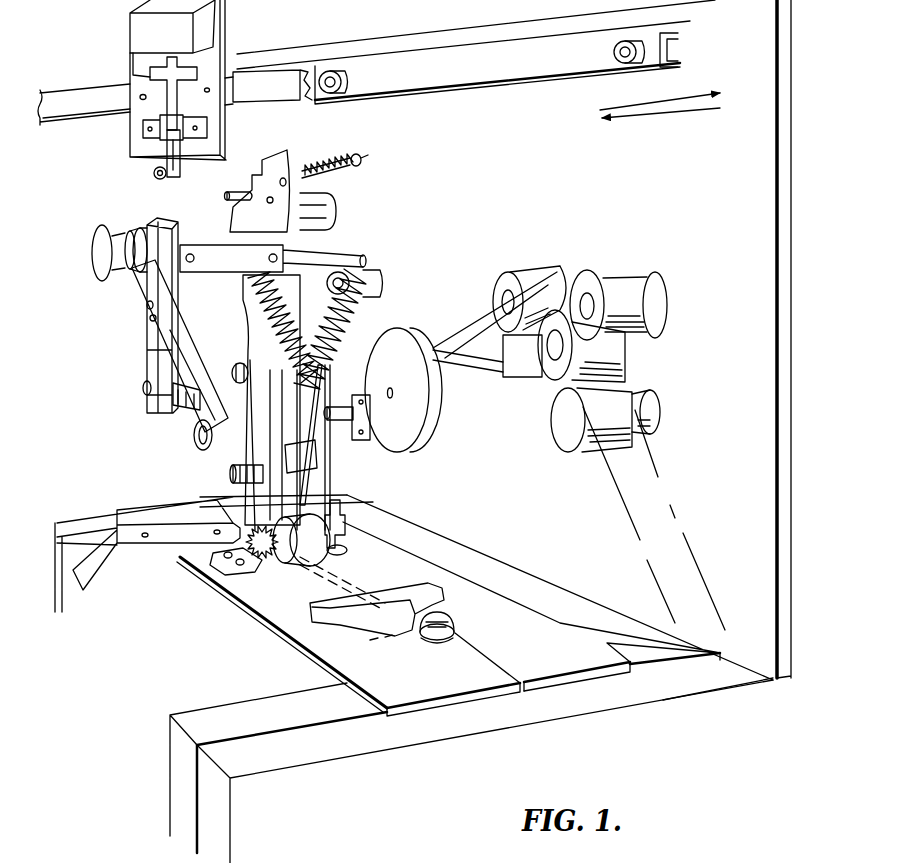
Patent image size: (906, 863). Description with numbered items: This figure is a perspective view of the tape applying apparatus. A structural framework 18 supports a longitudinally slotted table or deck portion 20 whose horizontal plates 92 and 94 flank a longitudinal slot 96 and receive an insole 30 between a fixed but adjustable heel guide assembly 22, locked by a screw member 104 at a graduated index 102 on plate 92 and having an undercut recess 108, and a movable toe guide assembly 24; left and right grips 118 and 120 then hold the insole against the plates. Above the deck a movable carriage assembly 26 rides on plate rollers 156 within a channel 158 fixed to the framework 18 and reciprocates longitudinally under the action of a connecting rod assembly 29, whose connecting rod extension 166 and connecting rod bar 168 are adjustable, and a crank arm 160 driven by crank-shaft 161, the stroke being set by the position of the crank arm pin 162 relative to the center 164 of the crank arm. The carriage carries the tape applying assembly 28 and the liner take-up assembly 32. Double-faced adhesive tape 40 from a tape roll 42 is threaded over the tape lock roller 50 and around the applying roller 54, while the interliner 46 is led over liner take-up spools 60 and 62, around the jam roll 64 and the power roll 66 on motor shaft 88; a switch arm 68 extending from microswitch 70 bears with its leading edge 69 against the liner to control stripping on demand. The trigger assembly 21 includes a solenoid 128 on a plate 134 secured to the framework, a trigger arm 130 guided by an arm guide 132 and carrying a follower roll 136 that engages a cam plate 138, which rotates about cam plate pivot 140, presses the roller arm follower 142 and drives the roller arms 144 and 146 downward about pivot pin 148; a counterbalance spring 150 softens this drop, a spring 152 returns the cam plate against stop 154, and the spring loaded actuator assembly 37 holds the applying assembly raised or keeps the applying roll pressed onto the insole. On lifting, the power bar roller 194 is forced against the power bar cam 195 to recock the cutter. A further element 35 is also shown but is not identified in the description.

The structural framework 18 is at (70, 140).
The table or deck portion 20 is at (548, 707).
The trigger assembly 21 is at (320, 127).
The heel guide assembly 22 is at (471, 610).
The toe guide assembly 24 is at (190, 503).
The carriage assembly 26 is at (578, 163).
The tape applying assembly 28 is at (169, 453).
The connecting rod assembly 29 is at (131, 327).
The insole 30 is at (377, 573).
The liner take-up assembly 32 is at (656, 244).
The bracket 35 is at (395, 464).
The spring loaded actuator assembly 37 is at (361, 317).
The adhesive tape 40 is at (392, 390).
The tape roll 42 is at (418, 426).
The interliner 46 is at (648, 493).
The tape lock roller 50 is at (286, 402).
The applying roller 54 is at (277, 568).
The liner take-up spool 60 is at (507, 280).
The liner take-up spool 62 is at (661, 297).
The liner take-up jam roll 64 is at (625, 367).
The liner take-up power roll 66 is at (563, 430).
The liner take-up switch arm 68 is at (492, 365).
The leading edge 69 is at (466, 352).
The microswitch 70 is at (522, 356).
The shaft 88 is at (653, 393).
The horizontal plate 92 is at (452, 676).
The horizontal plate 94 is at (534, 655).
The longitudinal slot 96 is at (467, 660).
The graduated index 102 is at (388, 637).
The heel guide assembly screw member 104 is at (455, 624).
The undercut recess 108 is at (309, 612).
The left grip 118 is at (223, 560).
The right grip 120 is at (348, 545).
The electrical solenoid 128 is at (182, 35).
The trigger arm 130 is at (170, 147).
The arm guide 132 is at (205, 116).
The plate 134 is at (140, 73).
The follower roll 136 is at (156, 177).
The cam plate 138 is at (265, 172).
The cam plate pivot 140 is at (264, 205).
The roller arm follower 142 is at (290, 364).
The roller arm 144 is at (233, 460).
The roller arm 146 is at (312, 481).
The pivot pin 148 is at (195, 436).
The counterbalance spring 150 is at (288, 330).
The spring 152 is at (334, 162).
The stop 154 is at (224, 195).
The plate rollers 156 is at (340, 71).
The channel 158 is at (270, 100).
The crank arm 160 is at (150, 365).
The crank-shaft 161 is at (185, 410).
The crank arm pin 162 is at (95, 262).
The center 164 is at (145, 389).
The connecting rod extension 166 is at (141, 291).
The connecting rod bar 168 is at (189, 344).
The power bar roller 194 is at (180, 412).
The power bar cam 195 is at (238, 273).